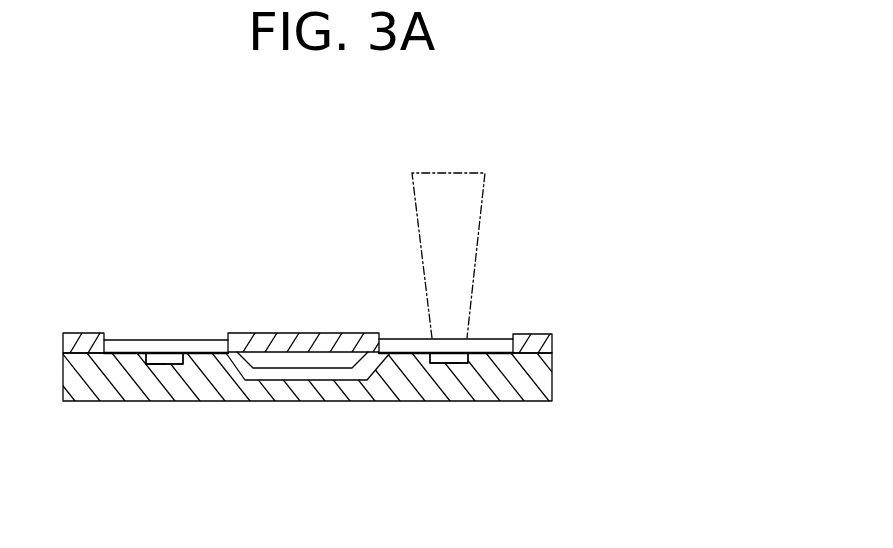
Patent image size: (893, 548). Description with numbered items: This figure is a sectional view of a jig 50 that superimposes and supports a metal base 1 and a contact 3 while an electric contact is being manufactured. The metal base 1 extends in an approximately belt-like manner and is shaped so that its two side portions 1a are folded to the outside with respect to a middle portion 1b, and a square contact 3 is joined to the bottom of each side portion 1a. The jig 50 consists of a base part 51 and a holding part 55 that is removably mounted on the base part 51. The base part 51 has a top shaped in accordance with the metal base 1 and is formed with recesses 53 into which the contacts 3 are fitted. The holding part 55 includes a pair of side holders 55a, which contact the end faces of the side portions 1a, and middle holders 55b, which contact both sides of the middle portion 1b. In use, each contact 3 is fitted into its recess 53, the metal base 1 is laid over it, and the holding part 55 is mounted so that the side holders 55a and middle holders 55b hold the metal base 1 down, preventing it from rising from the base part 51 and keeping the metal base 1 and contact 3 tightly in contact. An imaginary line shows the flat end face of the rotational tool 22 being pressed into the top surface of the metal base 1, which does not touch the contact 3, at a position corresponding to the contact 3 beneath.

The metal base 1 is at (215, 327).
The side portion 1a is at (153, 340).
The middle portion 1b is at (307, 379).
The contact 3 is at (163, 363).
The rotational tool 22 is at (481, 220).
The jig 50 is at (703, 313).
The base part 51 is at (557, 382).
The recess 53 is at (150, 364).
The holding part 55 is at (557, 338).
The side holder 55a is at (88, 334).
The middle holder 55b is at (308, 333).